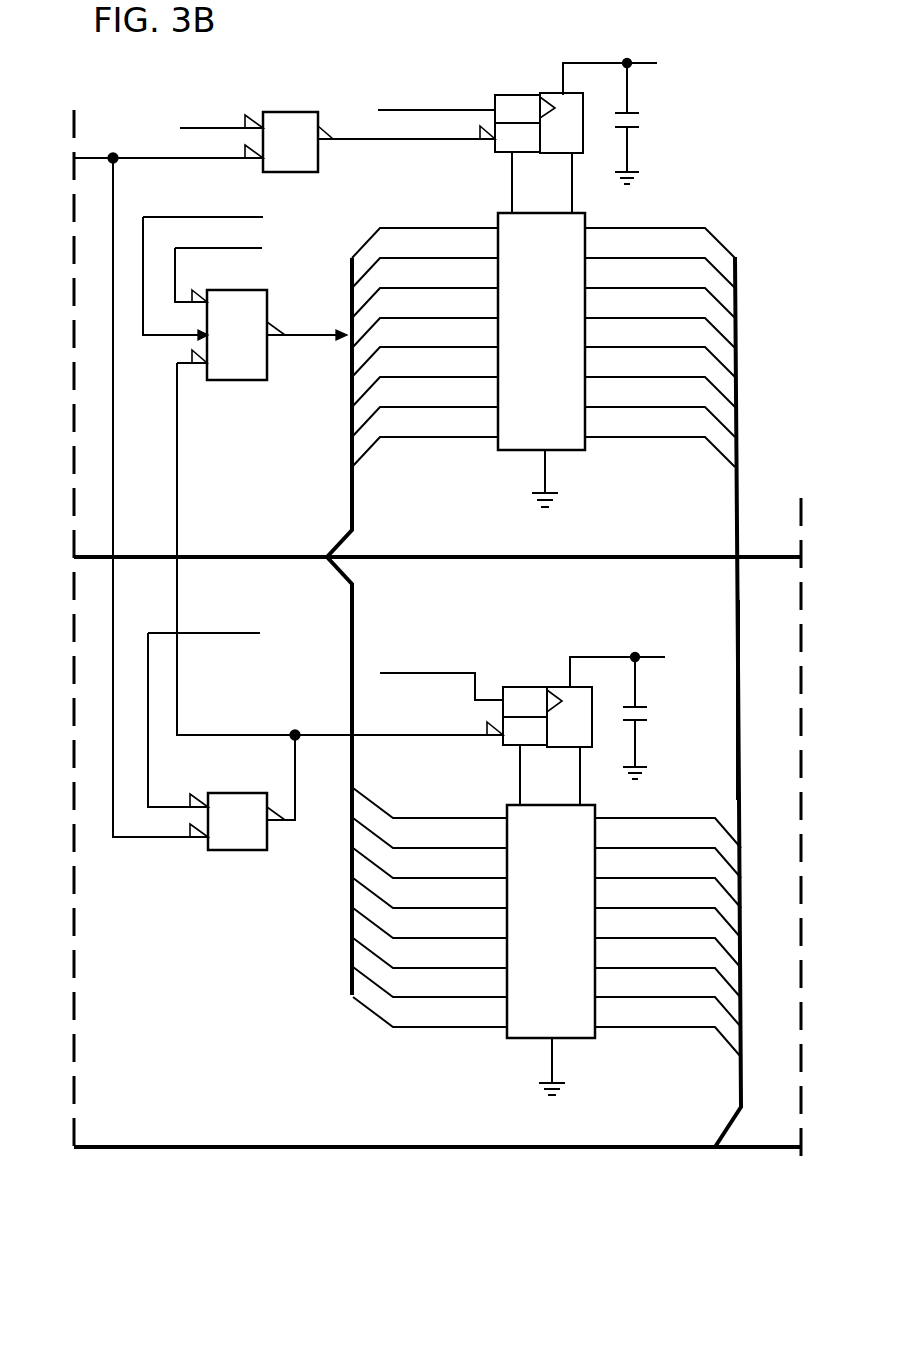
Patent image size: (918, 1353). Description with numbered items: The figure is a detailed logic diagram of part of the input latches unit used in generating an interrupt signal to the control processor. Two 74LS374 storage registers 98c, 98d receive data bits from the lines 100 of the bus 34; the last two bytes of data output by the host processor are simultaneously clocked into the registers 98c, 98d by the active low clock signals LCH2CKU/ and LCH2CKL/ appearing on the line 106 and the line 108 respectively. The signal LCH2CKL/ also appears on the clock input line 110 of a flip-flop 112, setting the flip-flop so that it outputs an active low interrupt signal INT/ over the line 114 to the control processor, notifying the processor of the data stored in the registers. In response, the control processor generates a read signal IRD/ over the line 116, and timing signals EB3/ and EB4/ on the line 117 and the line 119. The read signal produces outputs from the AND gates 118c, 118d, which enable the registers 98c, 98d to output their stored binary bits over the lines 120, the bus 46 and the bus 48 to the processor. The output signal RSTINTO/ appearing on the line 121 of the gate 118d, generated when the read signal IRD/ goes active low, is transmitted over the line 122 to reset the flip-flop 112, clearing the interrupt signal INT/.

The bus 34 is at (228, 556).
The bus 46 is at (742, 800).
The bus 48 is at (490, 1143).
The 74LS374 register 98c is at (562, 450).
The 74LS374 register 98d is at (566, 1038).
The lines 100 is at (357, 252).
The line 106 is at (463, 112).
The line 108 is at (441, 676).
The clock input line 110 is at (166, 216).
The flip-flop 112 is at (237, 381).
The line 114 is at (327, 337).
The line 116 is at (137, 157).
The line 117 is at (233, 127).
The AND gate 118c is at (305, 172).
The AND gate 118d is at (237, 851).
The line 119 is at (217, 634).
The lines 120 is at (712, 1050).
The line 121 is at (296, 770).
The line 122 is at (243, 738).